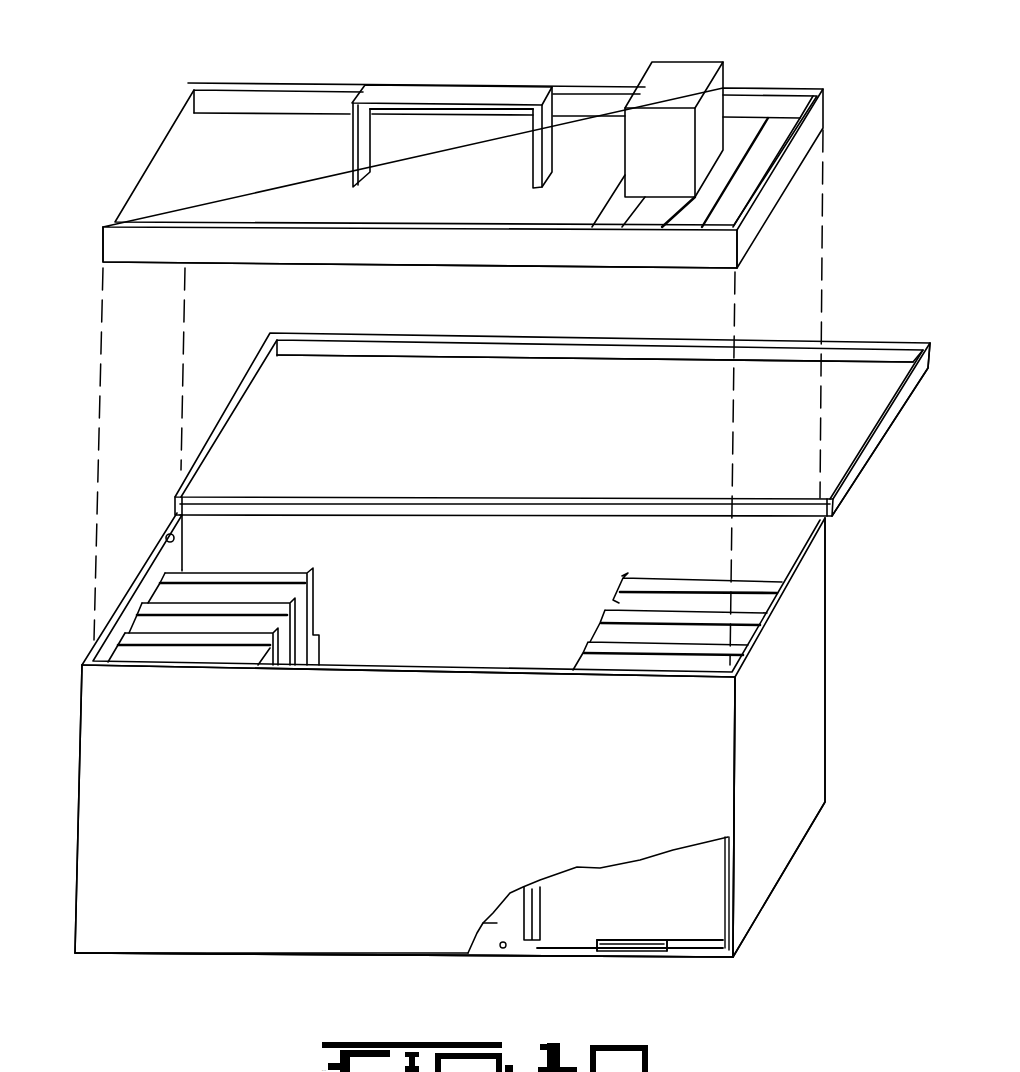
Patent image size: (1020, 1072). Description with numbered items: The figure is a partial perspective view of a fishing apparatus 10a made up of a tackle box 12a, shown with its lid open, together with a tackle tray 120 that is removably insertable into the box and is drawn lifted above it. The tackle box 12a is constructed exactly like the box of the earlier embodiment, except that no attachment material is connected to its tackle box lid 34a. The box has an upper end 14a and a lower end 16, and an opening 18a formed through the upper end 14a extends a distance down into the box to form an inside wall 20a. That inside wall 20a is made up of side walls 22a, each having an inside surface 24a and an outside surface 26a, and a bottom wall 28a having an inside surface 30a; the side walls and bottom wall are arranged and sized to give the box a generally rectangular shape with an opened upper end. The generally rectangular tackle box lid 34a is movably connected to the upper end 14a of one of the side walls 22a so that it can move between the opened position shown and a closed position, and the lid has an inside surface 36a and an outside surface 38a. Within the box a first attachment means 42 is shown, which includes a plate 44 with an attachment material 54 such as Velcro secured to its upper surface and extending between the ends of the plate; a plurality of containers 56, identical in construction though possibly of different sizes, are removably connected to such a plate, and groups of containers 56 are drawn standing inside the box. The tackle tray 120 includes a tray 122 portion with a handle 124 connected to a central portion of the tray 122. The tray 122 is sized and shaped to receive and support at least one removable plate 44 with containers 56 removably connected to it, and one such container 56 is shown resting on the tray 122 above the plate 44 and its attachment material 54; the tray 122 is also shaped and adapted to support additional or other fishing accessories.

The fishing apparatus 10a is at (181, 464).
The tackle box 12a is at (154, 952).
The upper end 14a is at (773, 595).
The lower end 16 is at (287, 953).
The opening 18a is at (168, 533).
The inside wall 20a is at (409, 559).
The side walls 22a is at (358, 672).
The inside surface 24a is at (487, 548).
The outside surface 26a is at (260, 935).
The bottom wall 28a is at (503, 948).
The inside surface 30a is at (495, 923).
The tackle box lid 34a is at (380, 372).
The inside surface 36a is at (545, 405).
The outside surface 38a is at (860, 490).
The first attachment means 42 is at (667, 951).
The plate 44 is at (698, 208).
The attachment material 54 is at (657, 208).
The containers 56 is at (675, 85).
The tackle tray 120 is at (158, 136).
The tray 122 is at (165, 247).
The handle 124 is at (422, 84).